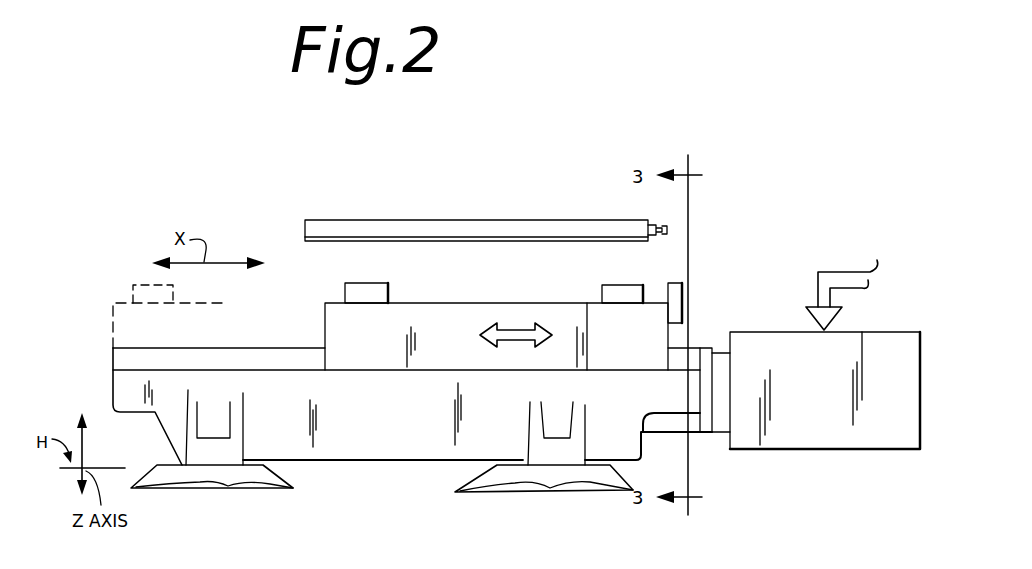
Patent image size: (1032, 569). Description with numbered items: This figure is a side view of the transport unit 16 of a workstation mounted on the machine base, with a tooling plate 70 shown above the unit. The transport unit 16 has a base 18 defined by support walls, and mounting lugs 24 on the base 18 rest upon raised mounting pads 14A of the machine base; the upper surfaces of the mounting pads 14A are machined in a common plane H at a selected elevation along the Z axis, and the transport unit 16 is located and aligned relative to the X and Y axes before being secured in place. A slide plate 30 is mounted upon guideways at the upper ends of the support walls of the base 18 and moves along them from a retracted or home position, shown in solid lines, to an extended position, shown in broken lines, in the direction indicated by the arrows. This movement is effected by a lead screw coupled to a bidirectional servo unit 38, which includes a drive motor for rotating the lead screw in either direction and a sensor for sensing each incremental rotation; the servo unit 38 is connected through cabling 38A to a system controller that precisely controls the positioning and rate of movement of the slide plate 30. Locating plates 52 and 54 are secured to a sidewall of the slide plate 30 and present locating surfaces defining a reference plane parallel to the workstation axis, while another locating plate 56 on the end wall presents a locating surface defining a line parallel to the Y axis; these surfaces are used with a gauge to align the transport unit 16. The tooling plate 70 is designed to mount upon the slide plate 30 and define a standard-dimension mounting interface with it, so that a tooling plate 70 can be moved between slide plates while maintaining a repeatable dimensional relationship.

The mounting pads 14A is at (195, 481).
The transport unit 16 is at (289, 524).
The base 18 is at (344, 448).
The mounting lugs 24 is at (183, 462).
The slide plate 30 is at (338, 325).
The servo unit 38 is at (828, 450).
The cabling 38A is at (845, 272).
The locating plate 52 is at (619, 290).
The locating plate 54 is at (367, 288).
The locating plate 56 is at (674, 288).
The tooling plate 70 is at (380, 212).